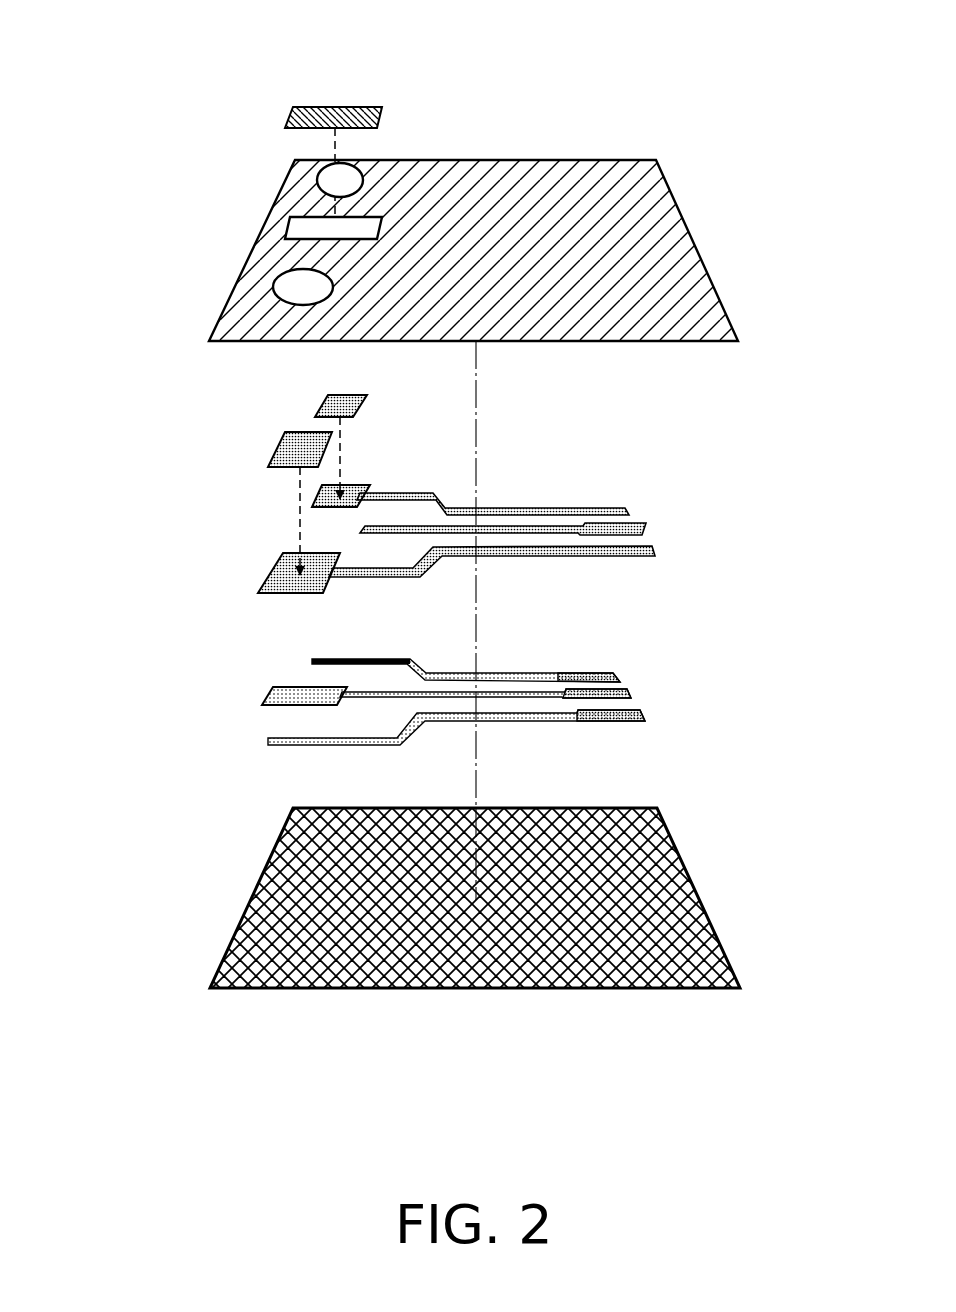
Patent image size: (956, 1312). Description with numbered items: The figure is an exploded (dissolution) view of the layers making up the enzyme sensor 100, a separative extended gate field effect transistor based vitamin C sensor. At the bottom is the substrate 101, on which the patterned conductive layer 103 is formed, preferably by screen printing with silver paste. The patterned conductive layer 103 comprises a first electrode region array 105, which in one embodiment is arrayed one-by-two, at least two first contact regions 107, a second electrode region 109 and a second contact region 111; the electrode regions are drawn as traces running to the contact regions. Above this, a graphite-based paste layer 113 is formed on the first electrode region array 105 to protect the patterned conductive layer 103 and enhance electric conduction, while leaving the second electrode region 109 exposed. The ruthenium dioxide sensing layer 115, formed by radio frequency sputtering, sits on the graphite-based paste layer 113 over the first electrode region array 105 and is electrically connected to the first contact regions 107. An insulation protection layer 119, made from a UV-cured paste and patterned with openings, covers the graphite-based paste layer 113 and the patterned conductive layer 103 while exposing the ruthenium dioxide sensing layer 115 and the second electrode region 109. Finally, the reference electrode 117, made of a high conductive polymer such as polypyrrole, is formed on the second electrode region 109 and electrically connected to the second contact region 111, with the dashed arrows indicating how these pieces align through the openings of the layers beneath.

The enzyme sensor 100 is at (813, 1100).
The substrate 101 is at (678, 888).
The patterned conductive layer 103 is at (312, 645).
The first electrode region array 105 is at (313, 662).
The first contact regions 107 is at (613, 673).
The second electrode region 109 is at (270, 690).
The second contact region 111 is at (623, 690).
The graphite-based paste layer 113 is at (325, 475).
The ruthenium dioxide sensing layer 115 is at (325, 402).
The reference electrode 117 is at (305, 108).
The insulation protection layer 119 is at (557, 170).